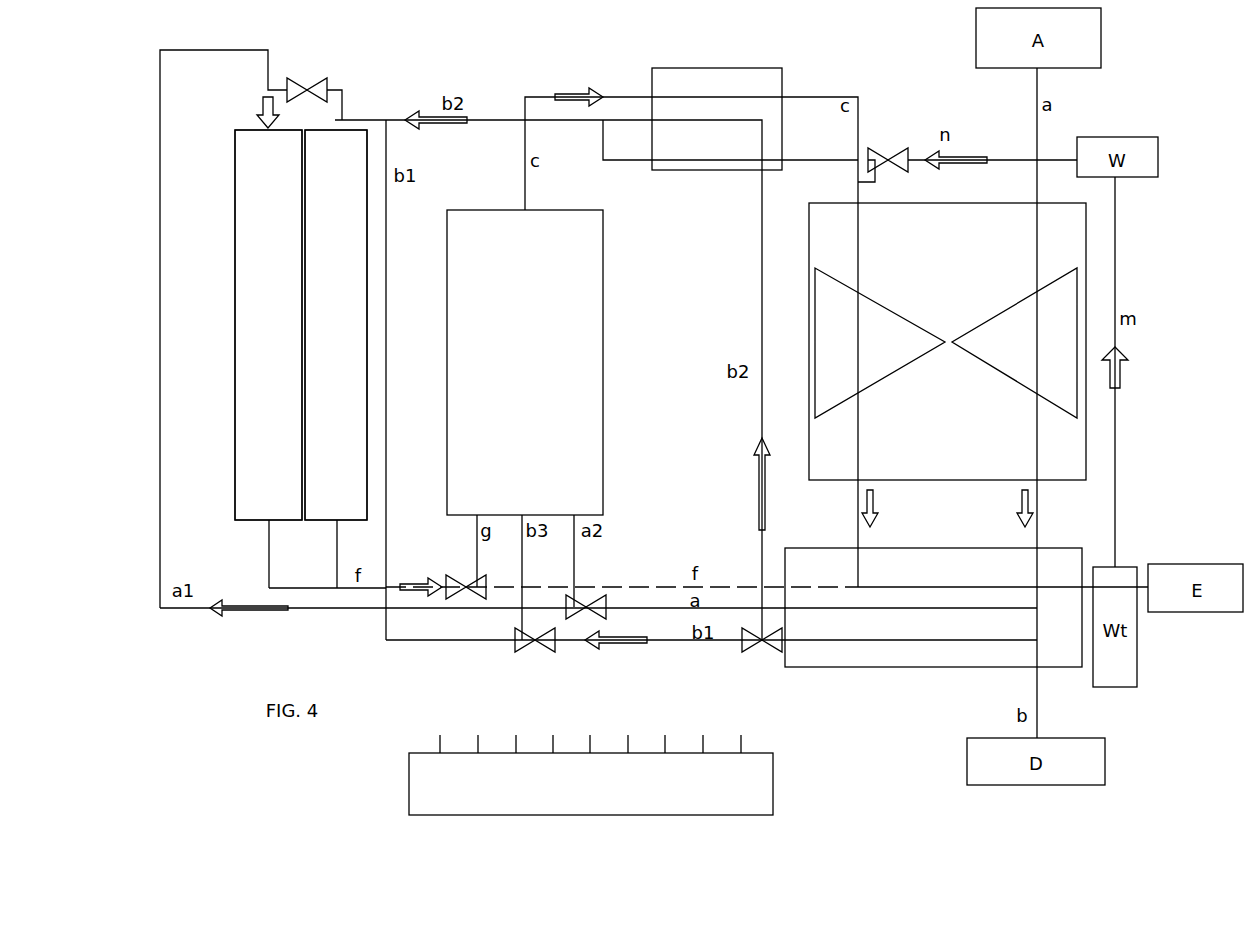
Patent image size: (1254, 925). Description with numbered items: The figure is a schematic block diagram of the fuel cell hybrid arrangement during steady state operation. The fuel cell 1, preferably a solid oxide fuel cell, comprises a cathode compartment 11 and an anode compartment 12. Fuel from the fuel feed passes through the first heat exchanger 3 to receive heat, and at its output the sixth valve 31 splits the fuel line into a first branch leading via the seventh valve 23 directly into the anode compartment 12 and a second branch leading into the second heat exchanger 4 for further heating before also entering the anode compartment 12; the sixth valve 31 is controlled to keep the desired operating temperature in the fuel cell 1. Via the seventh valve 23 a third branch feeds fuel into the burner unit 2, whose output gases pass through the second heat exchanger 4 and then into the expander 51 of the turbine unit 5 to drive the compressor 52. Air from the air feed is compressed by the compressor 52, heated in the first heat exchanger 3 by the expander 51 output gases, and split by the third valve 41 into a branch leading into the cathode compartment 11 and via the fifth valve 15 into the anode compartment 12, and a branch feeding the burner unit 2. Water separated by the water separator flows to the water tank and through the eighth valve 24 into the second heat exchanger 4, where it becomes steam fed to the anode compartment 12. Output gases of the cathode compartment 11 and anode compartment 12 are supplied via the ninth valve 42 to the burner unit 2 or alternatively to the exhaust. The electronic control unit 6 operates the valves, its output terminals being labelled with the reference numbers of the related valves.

The fuel cell 1 is at (286, 325).
The cathode compartment 11 is at (268, 325).
The anode compartment 12 is at (336, 325).
The fifth valve 15 is at (307, 77).
The burner unit 2 is at (525, 362).
The seventh valve 23 is at (535, 653).
The eighth valve 24 is at (888, 149).
The first heat exchanger 3 is at (933, 607).
The sixth valve 31 is at (762, 653).
The second heat exchanger 4 is at (717, 119).
The third valve 41 is at (597, 615).
The ninth valve 42 is at (465, 576).
The turbine unit 5 is at (947, 341).
The expander 51 is at (880, 343).
The compressor 52 is at (1014, 343).
The electronic control unit 6 is at (591, 760).